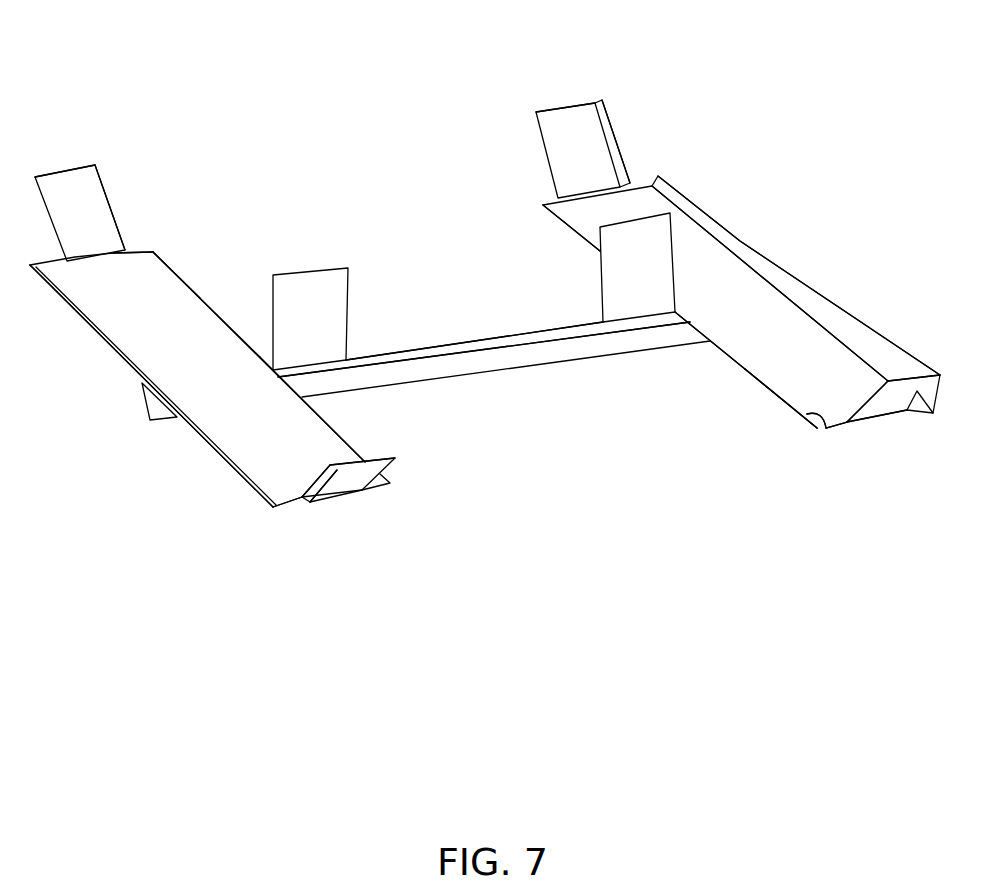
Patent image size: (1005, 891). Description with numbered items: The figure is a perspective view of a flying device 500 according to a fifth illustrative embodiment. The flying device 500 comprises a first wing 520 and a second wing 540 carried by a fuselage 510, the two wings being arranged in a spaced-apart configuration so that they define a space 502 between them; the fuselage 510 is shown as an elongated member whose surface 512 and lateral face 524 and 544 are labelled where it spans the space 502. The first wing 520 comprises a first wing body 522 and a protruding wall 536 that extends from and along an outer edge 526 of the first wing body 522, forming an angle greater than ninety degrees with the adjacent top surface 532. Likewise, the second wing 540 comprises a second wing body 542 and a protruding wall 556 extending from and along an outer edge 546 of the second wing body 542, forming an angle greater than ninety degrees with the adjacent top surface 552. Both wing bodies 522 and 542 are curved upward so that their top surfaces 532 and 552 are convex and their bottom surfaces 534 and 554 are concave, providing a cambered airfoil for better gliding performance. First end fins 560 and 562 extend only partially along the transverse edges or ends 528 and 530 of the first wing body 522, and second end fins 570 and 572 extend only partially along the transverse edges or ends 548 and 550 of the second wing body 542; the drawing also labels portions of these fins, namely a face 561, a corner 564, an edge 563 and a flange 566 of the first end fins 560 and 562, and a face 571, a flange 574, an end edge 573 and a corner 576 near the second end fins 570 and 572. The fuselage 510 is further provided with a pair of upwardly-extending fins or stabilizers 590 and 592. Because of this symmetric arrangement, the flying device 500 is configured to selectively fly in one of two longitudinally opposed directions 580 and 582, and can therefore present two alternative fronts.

The flying device 500 is at (374, 113).
The space 502 is at (440, 238).
The fuselage 510 is at (460, 392).
The top surface of cross bar 512 is at (472, 363).
The first wing 520 is at (194, 445).
The first wing body 522 is at (165, 276).
The inner edge of first side plate 524 is at (327, 416).
The outer edge 526 is at (275, 507).
The transverse edge 528 is at (117, 250).
The transverse edge 530 is at (388, 485).
The top surface 532 is at (170, 310).
The bottom surface 534 is at (360, 500).
The protruding wall 536 is at (48, 292).
The second wing 540 is at (742, 220).
The second wing body 542 is at (737, 352).
The inner edge of second side plate 544 is at (750, 373).
The outer edge 546 is at (762, 287).
The transverse edge 548 is at (558, 200).
The transverse edge 550 is at (807, 415).
The top surface 552 is at (800, 380).
The bottom surface 554 is at (871, 428).
The protruding wall 556 is at (853, 328).
The first end fin 560 is at (126, 202).
The face of first upper tab 561 is at (90, 188).
The first end fin 562 is at (396, 471).
The edge of first lower tab 563 is at (387, 458).
The corner of first upper tab 564 is at (33, 178).
The flange of first lower tab 566 is at (315, 478).
The second end fin 570 is at (535, 130).
The face of second upper tab 571 is at (573, 123).
The second end fin 572 is at (941, 394).
The end edge of second side plate 573 is at (888, 381).
The flange of second upper tab 574 is at (622, 152).
The corner of second side plate 576 is at (940, 373).
The longitudinal direction 580 is at (90, 392).
The longitudinal direction 582 is at (890, 289).
The fin or stabilizer 590 is at (340, 313).
The fin or stabilizer 592 is at (610, 270).